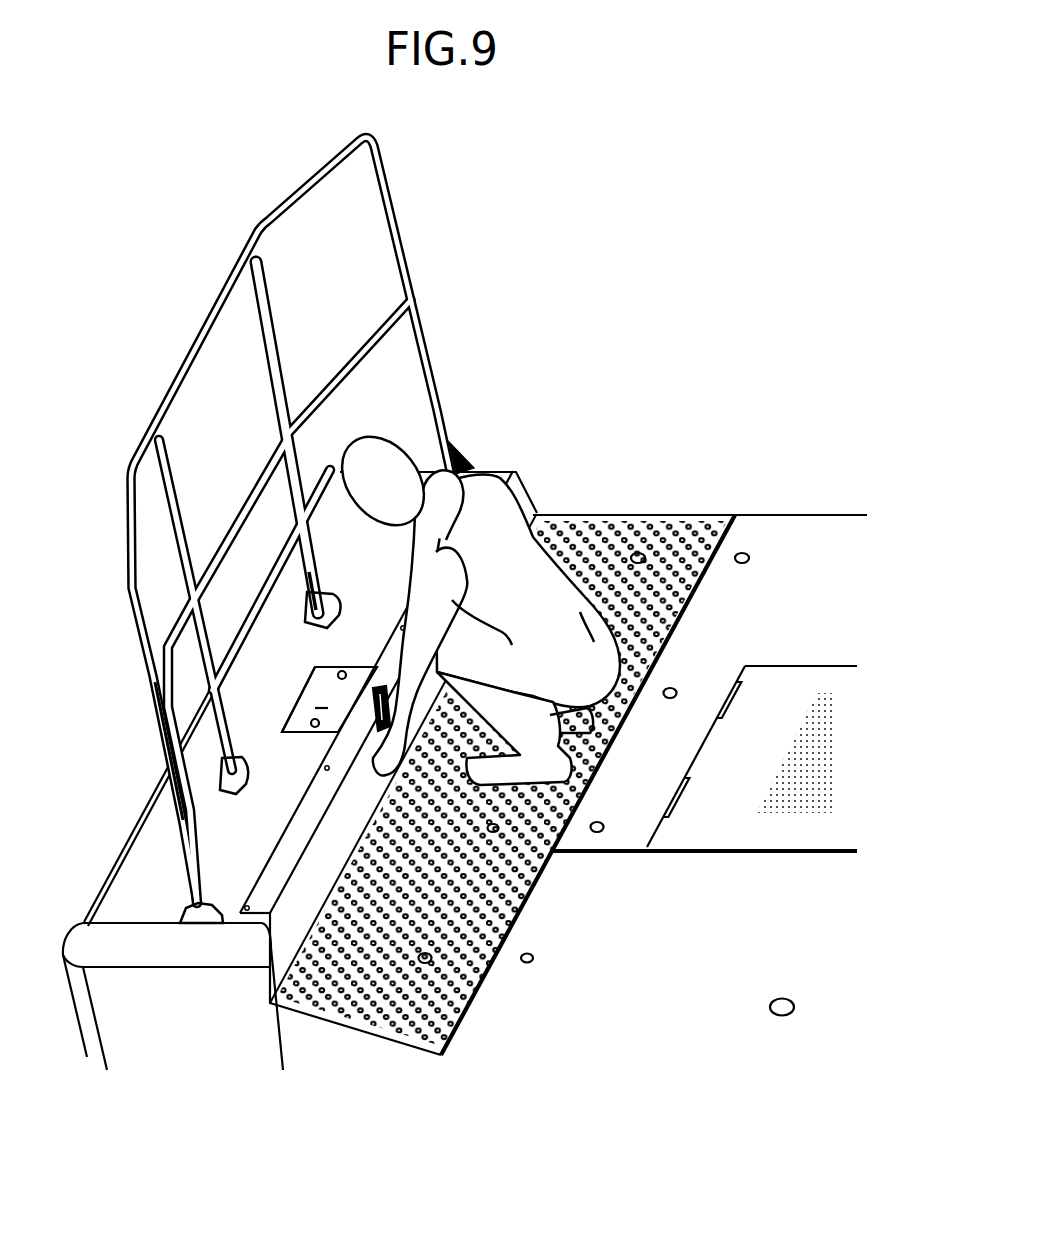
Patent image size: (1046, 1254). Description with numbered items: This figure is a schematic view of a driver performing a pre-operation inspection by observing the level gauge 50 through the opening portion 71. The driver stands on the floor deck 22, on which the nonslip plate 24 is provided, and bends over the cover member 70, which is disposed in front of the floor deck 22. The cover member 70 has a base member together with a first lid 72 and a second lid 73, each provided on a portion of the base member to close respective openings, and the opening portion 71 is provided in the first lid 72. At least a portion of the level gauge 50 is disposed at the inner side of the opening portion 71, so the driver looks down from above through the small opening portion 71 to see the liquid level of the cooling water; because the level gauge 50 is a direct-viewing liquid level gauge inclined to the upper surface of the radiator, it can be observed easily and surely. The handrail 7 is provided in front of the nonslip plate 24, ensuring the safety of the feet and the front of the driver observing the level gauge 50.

The handrail 7 is at (227, 283).
The floor deck 22 is at (767, 536).
The nonslip plate 24 is at (617, 518).
The level gauge 50 is at (373, 705).
The cover member 70 is at (128, 890).
The opening portion 71 is at (312, 690).
The first lid 72 is at (277, 870).
The second lid 73 is at (306, 694).